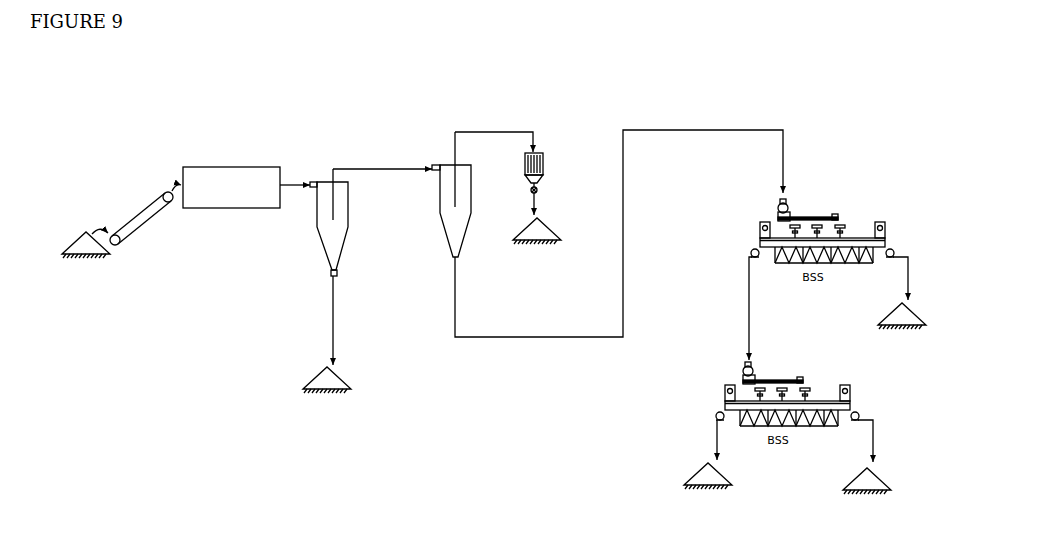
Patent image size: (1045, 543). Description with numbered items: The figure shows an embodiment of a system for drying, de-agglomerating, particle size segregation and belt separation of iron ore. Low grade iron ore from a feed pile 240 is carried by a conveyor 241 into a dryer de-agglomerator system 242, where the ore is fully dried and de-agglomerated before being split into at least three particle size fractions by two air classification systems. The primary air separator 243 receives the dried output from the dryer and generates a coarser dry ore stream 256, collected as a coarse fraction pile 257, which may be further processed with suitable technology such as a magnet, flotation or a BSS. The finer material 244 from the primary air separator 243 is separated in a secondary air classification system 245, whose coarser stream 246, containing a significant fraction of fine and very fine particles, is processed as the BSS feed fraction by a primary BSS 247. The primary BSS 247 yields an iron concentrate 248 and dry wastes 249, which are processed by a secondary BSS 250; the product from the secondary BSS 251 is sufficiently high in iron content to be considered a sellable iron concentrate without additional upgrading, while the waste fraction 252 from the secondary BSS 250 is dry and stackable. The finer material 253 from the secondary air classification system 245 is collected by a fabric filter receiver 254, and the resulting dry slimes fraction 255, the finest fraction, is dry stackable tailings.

The low grade iron feed pile 240 is at (72, 233).
The conveyor 241 is at (135, 214).
The dryer de-agglomerator system 242 is at (223, 166).
The primary air separator 243 is at (320, 181).
The finer material 244 is at (378, 168).
The secondary air classification system 245 is at (440, 164).
The coarser stream 246 is at (459, 323).
The primary BSS 247 is at (837, 214).
The iron concentrate pile 248 is at (917, 315).
The dry wastes 249 is at (747, 267).
The secondary BSS 250 is at (803, 377).
The product from the secondary BSS 251 is at (852, 478).
The waste fraction 252 is at (697, 468).
The finer material 253 is at (491, 131).
The fabric filter receiver 254 is at (543, 151).
The dry slimes fraction 255 is at (554, 232).
The coarser dry ore stream 256 is at (338, 313).
The coarse fraction pile 257 is at (313, 376).